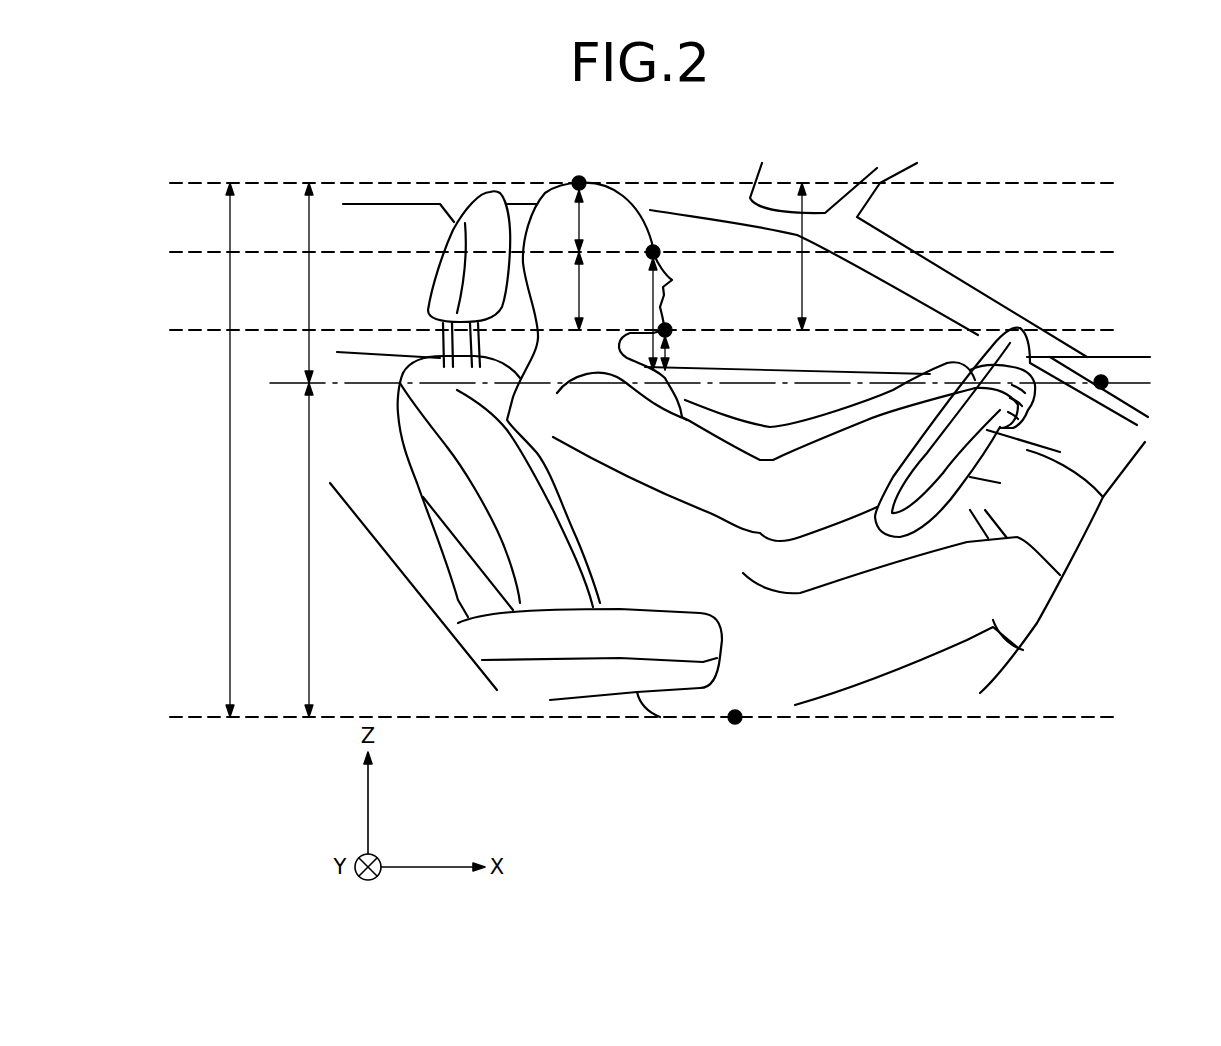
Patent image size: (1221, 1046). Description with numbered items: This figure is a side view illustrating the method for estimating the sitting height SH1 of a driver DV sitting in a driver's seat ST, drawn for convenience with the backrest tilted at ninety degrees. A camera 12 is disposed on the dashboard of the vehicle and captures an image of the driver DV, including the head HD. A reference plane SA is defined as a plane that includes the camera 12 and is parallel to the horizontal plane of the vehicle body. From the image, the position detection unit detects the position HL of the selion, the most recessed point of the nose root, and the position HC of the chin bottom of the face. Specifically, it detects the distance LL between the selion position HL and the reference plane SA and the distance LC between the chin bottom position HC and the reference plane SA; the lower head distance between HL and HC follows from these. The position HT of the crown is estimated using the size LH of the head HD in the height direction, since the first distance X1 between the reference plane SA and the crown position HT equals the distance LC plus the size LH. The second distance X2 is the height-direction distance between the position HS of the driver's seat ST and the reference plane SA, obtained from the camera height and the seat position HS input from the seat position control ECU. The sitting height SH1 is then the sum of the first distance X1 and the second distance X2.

The camera 12 is at (1101, 377).
The position of the crown HT is at (579, 177).
The head HD is at (627, 210).
The position of the selion HL is at (653, 247).
The position of the chin bottom HC is at (667, 327).
The distance between the selion and the reference plane LL is at (672, 314).
The distance between the chin bottom and the reference plane LC is at (683, 353).
The size in the height direction of the head LH is at (803, 287).
The reference plane SA is at (853, 383).
The driver DV is at (700, 442).
The driver's seat ST is at (430, 458).
The position of the driver's seat HS is at (735, 710).
The first distance X1 is at (293, 283).
The second distance X2 is at (293, 550).
The sitting height SH1 is at (206, 450).